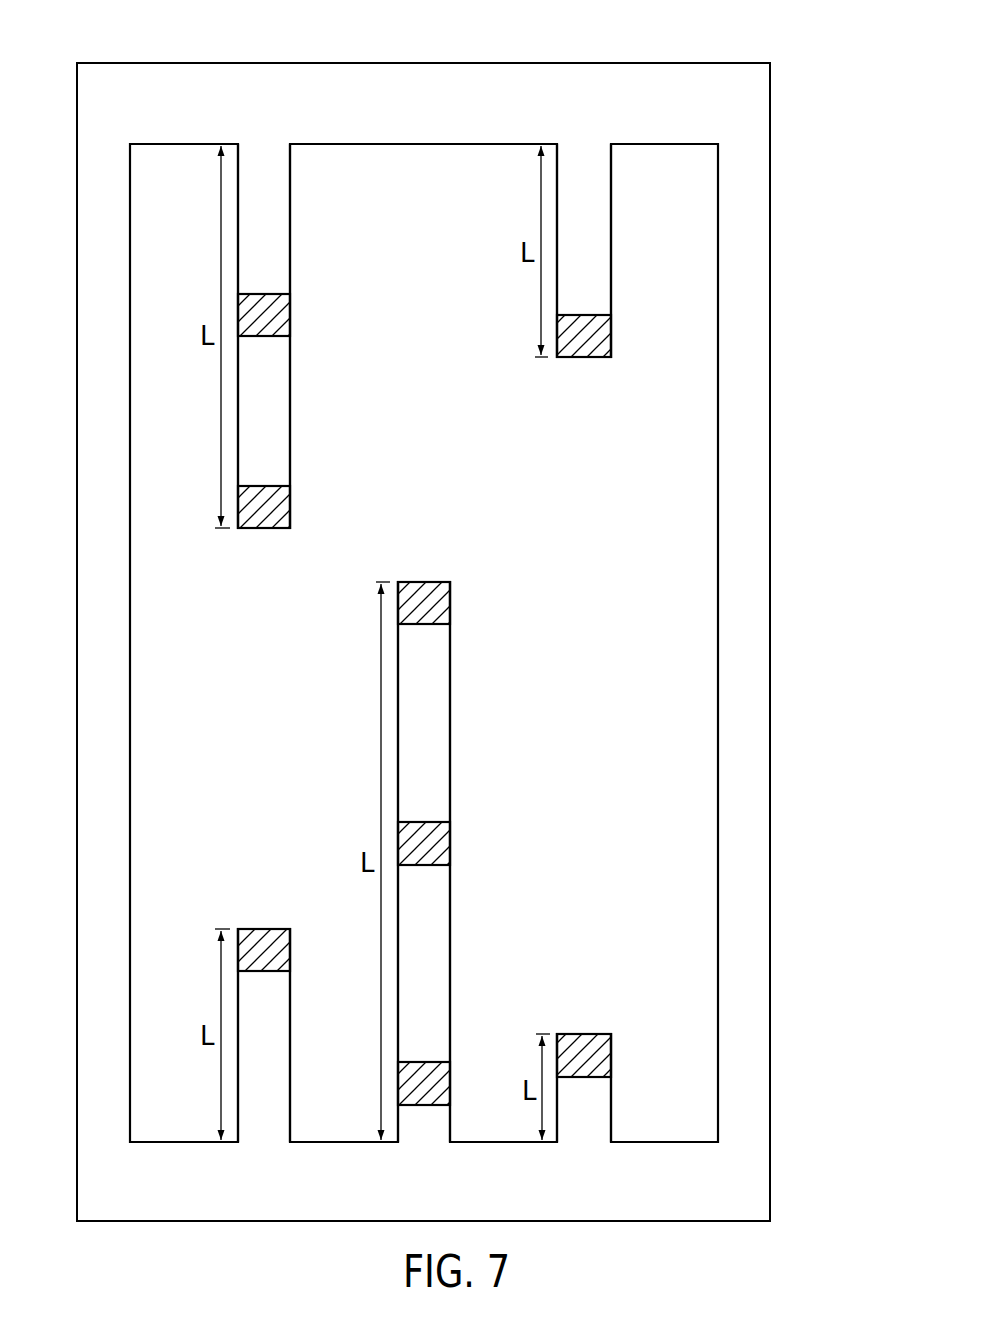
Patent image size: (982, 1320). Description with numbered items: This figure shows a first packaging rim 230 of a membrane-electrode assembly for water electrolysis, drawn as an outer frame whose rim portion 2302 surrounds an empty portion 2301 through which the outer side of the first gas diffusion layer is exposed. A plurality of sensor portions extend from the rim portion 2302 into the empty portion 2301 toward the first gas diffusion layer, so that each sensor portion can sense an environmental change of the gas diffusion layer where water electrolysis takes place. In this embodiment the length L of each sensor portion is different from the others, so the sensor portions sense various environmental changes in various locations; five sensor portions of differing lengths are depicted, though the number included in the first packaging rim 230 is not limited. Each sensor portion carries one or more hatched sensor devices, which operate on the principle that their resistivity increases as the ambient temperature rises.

The first packaging rim 230 is at (423, 63).
The empty portion 2301 is at (695, 631).
The rim portion 2302 is at (748, 221).